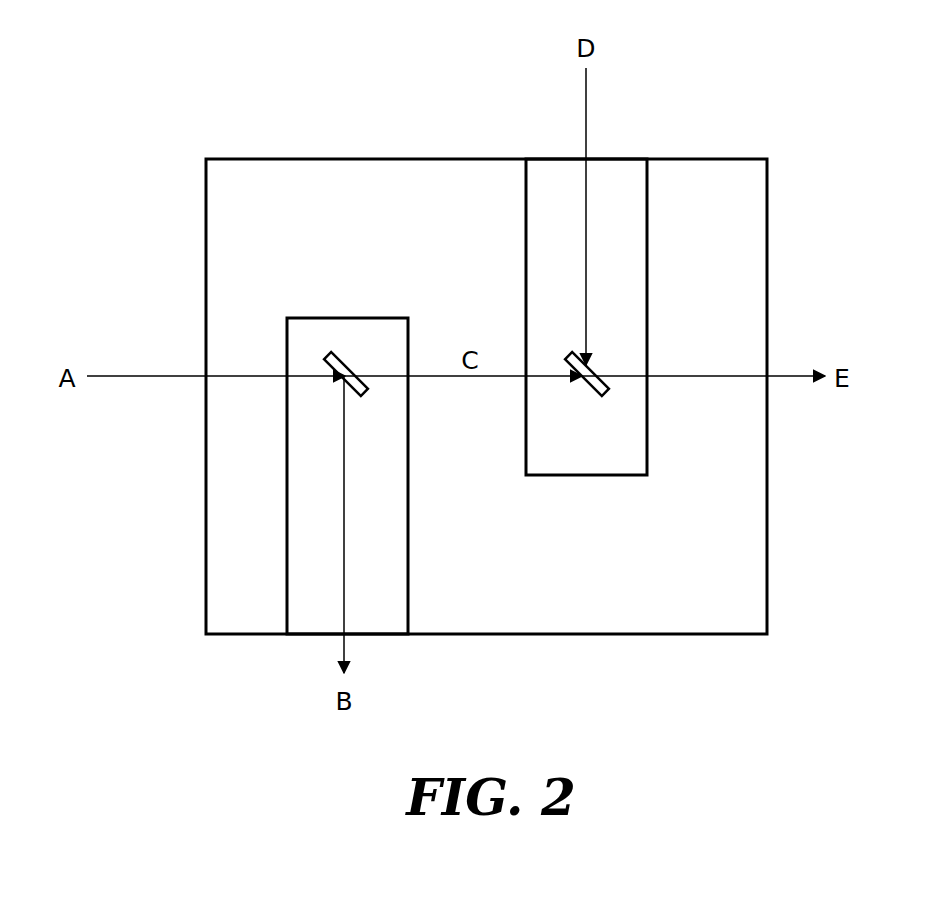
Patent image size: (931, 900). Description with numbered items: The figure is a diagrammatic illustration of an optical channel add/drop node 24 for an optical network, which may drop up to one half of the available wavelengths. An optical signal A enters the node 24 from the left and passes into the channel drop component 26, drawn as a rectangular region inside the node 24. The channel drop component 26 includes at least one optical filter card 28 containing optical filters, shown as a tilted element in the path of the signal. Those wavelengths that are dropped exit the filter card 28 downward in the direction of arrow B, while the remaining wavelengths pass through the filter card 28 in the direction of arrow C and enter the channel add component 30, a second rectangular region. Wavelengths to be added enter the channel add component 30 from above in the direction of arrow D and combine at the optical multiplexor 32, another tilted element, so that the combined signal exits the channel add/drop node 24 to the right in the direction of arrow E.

The optical add/drop node 24 is at (206, 236).
The channel drop component 26 is at (303, 332).
The optical filter card 28 is at (363, 395).
The channel add component 30 is at (585, 452).
The optical multiplexor 32 is at (593, 362).